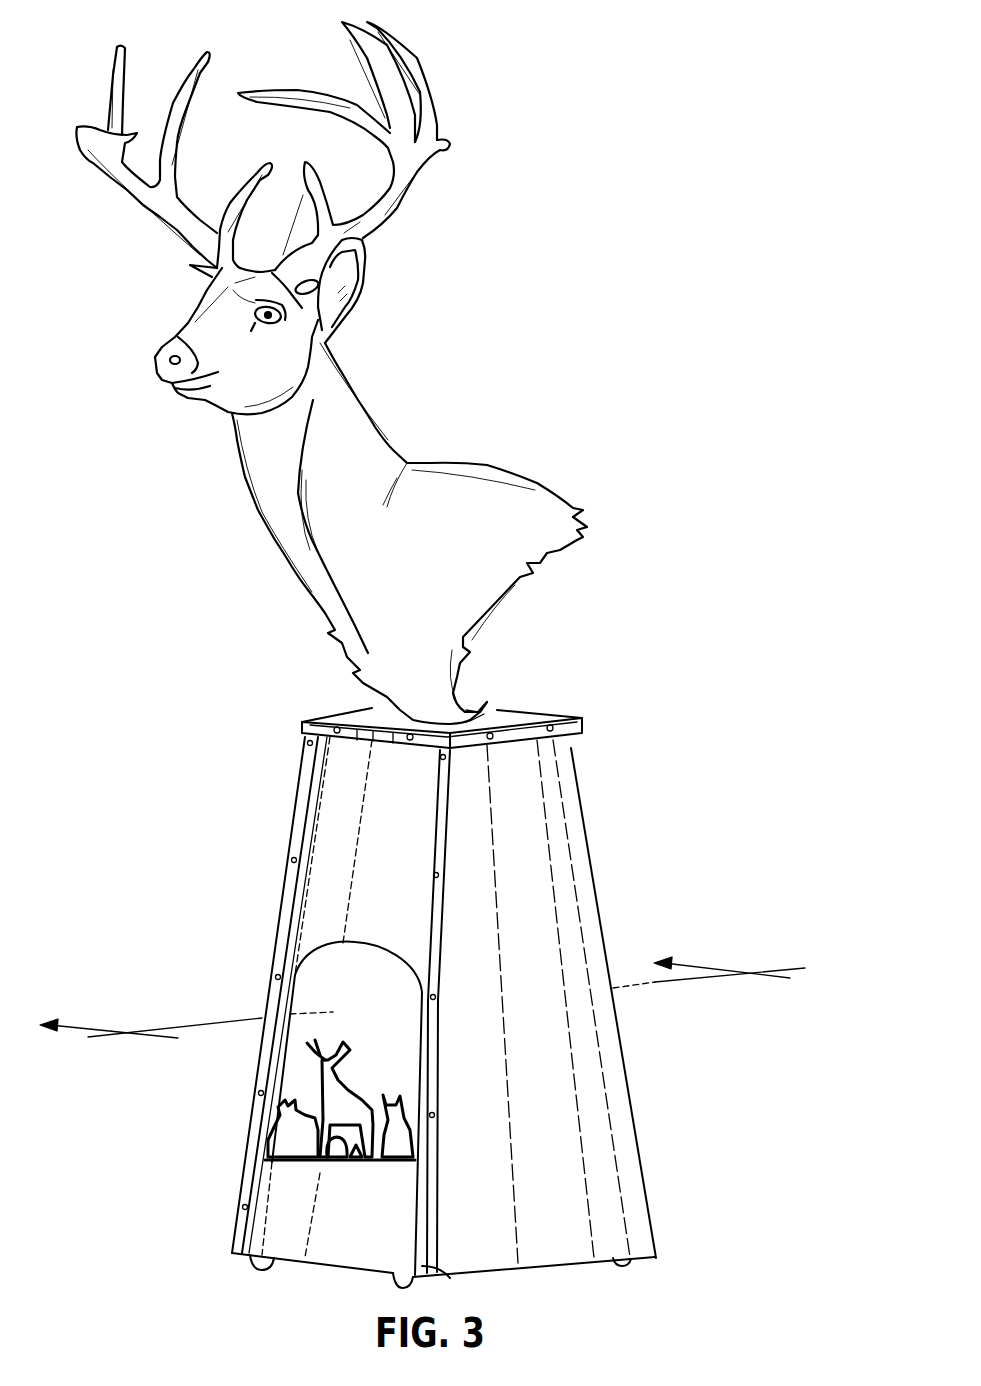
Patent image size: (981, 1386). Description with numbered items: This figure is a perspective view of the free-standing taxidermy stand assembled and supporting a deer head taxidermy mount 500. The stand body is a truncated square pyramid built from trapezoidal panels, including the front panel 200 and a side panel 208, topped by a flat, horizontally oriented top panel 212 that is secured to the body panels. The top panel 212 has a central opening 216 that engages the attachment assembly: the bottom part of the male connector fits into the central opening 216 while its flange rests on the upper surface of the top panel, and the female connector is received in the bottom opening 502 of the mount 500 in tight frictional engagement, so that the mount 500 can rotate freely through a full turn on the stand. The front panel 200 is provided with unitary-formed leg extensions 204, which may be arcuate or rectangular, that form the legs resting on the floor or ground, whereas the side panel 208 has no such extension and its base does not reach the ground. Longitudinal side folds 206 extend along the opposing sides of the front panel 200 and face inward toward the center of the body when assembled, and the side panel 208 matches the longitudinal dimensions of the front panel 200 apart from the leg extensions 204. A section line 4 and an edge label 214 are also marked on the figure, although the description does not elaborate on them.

The taxidermy mount 500 is at (507, 467).
The bottom opening 502 is at (485, 676).
The front panel 200 is at (415, 995).
The top panel 212 is at (512, 722).
The platform edge 214 is at (300, 722).
The central opening 216 is at (484, 731).
The side panel 208 is at (598, 1085).
The side folds 206 is at (233, 1252).
The leg extensions 204 is at (258, 1268).
The section line 4- 4 is at (422, 1005).